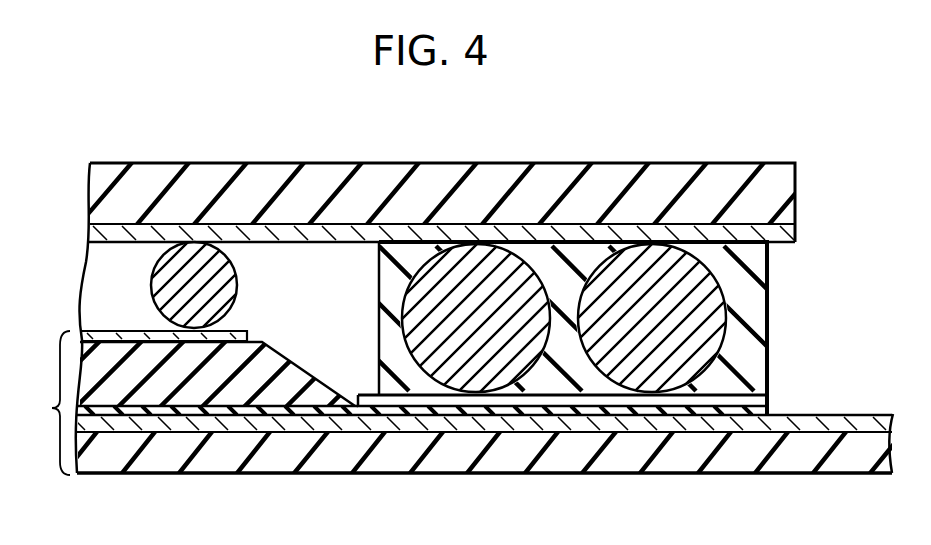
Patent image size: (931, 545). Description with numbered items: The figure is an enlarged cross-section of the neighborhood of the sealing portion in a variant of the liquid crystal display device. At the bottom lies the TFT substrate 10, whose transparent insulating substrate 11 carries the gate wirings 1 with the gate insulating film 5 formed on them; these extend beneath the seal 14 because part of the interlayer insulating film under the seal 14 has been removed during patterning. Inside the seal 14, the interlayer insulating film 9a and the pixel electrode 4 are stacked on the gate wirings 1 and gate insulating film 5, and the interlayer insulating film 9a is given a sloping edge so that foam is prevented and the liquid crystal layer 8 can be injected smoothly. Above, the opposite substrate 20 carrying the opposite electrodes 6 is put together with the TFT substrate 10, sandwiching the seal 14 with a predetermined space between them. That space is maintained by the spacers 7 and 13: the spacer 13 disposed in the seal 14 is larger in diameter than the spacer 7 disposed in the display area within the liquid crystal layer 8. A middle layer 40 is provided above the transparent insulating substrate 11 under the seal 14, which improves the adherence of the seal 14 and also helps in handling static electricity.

The opposite substrate 20 is at (778, 192).
The opposite electrodes 6 is at (780, 232).
The spacer 7 is at (201, 243).
The liquid crystal layer 8 is at (302, 268).
The pixel electrode 4 is at (128, 333).
The interlayer insulating film with sloping edge 9a is at (262, 392).
The TFT substrate 10 is at (465, 377).
The spacer 13 is at (703, 302).
The seal 14 is at (750, 360).
The middle layer 40 is at (750, 398).
The gate insulating film 5 is at (675, 407).
The gate wirings 1 is at (595, 423).
The transparent insulating substrate 11 is at (840, 460).